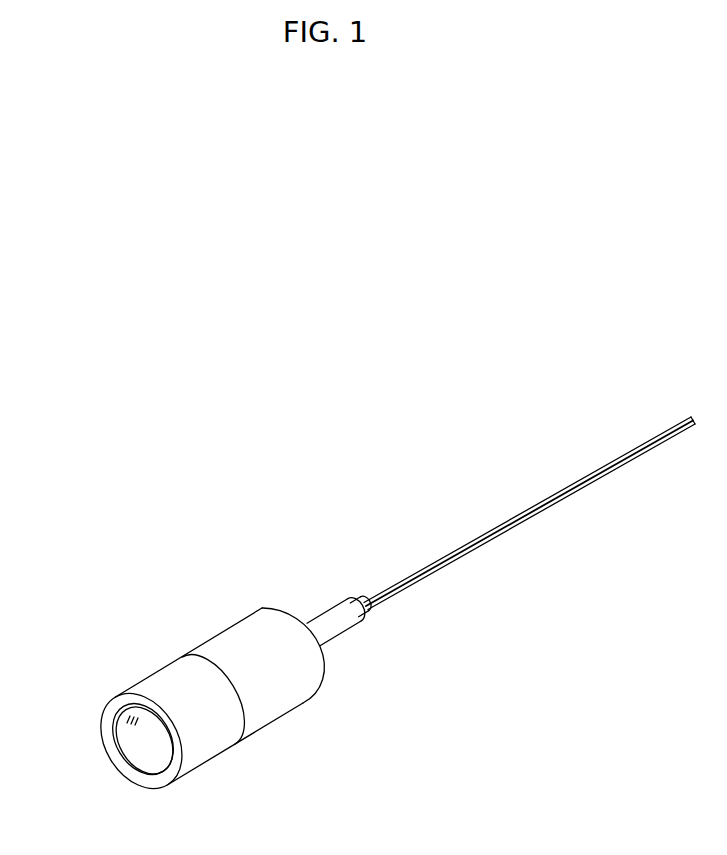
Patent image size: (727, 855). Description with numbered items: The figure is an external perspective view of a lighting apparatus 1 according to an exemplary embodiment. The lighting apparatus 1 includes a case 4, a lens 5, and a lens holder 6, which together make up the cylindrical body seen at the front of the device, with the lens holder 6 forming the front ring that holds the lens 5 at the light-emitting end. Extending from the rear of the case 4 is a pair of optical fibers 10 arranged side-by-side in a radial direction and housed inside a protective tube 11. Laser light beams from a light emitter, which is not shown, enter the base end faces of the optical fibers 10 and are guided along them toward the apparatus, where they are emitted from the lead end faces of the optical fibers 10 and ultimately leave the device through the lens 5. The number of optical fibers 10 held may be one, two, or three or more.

The lighting apparatus 1 is at (104, 517).
The case 4 is at (226, 622).
The lens 5 is at (140, 738).
The lens holder 6 is at (138, 672).
The optical fibers 10 is at (459, 548).
The protective tube 11 is at (347, 618).